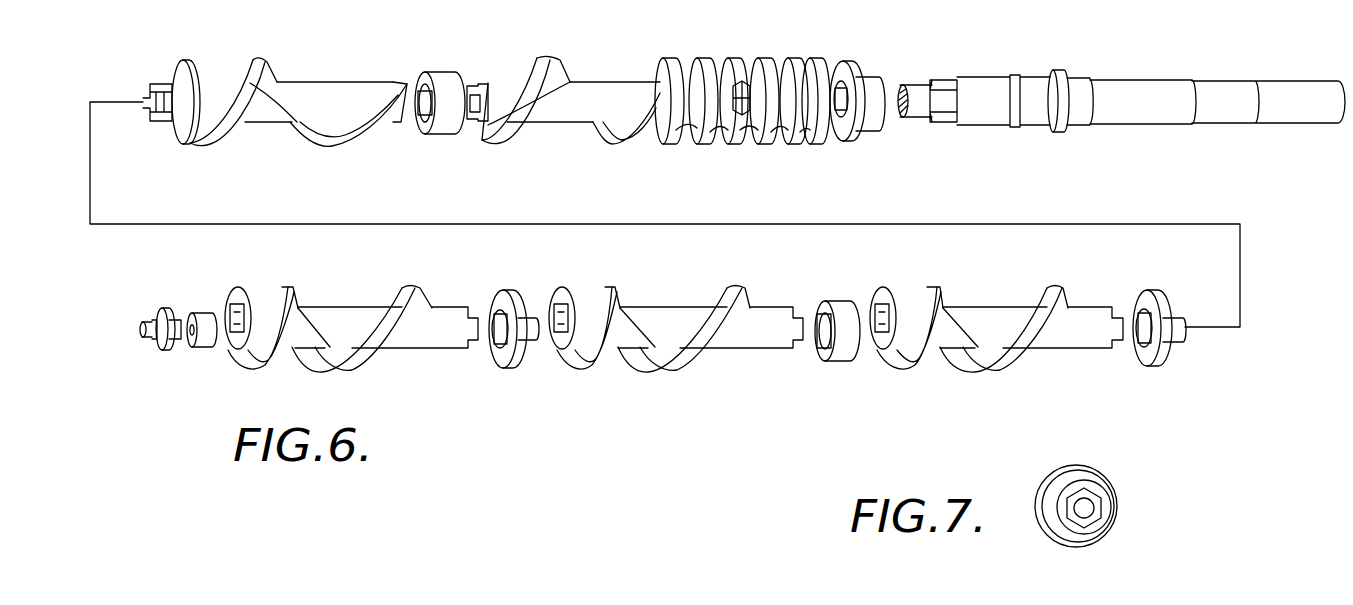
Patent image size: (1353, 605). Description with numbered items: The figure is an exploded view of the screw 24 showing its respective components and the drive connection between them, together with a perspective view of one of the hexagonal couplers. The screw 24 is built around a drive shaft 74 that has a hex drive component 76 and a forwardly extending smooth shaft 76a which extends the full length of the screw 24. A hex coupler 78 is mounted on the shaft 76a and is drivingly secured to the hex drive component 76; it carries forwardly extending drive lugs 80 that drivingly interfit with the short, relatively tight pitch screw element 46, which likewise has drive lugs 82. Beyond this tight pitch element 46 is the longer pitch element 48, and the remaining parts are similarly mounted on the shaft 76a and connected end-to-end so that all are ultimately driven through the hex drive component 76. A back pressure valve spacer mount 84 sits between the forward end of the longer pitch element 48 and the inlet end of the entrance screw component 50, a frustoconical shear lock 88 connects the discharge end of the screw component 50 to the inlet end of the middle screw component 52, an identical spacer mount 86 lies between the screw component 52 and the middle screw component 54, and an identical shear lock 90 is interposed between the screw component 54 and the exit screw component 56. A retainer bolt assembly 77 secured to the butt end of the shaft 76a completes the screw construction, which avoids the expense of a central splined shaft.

In FIG. 6, the screw 24 is at (1017, 38).
In FIG. 6, the tight pitch screw element 46 is at (790, 143).
In FIG. 6, the longer pitch element 48 is at (648, 107).
In FIG. 6, the screw component 50 is at (275, 102).
In FIG. 6, the screw component 52 is at (996, 329).
In FIG. 6, the screw component 54 is at (676, 329).
In FIG. 6, the screw component 56 is at (351, 329).
In FIG. 6, the drive shaft 74 is at (766, 210).
In FIG. 6, the hex drive component 76 is at (943, 78).
In FIG. 6, the smooth shaft 76a is at (918, 112).
In FIG. 6, the retainer bolt assembly 77 is at (152, 322).
In FIG. 6, the hex coupler 78 is at (860, 103).
In FIG. 7, the hex coupler 78 is at (1097, 478).
In FIG. 6, the drive lugs 80 is at (842, 150).
In FIG. 6, the drive lugs 82 is at (744, 77).
In FIG. 7, the drive lugs 82 is at (1077, 503).
In FIG. 6, the back pressure valve spacer mount 84 is at (444, 75).
In FIG. 6, the spacer mount 86 is at (843, 352).
In FIG. 6, the frustoconical shear lock 88 is at (1172, 350).
In FIG. 6, the shear lock 90 is at (520, 302).